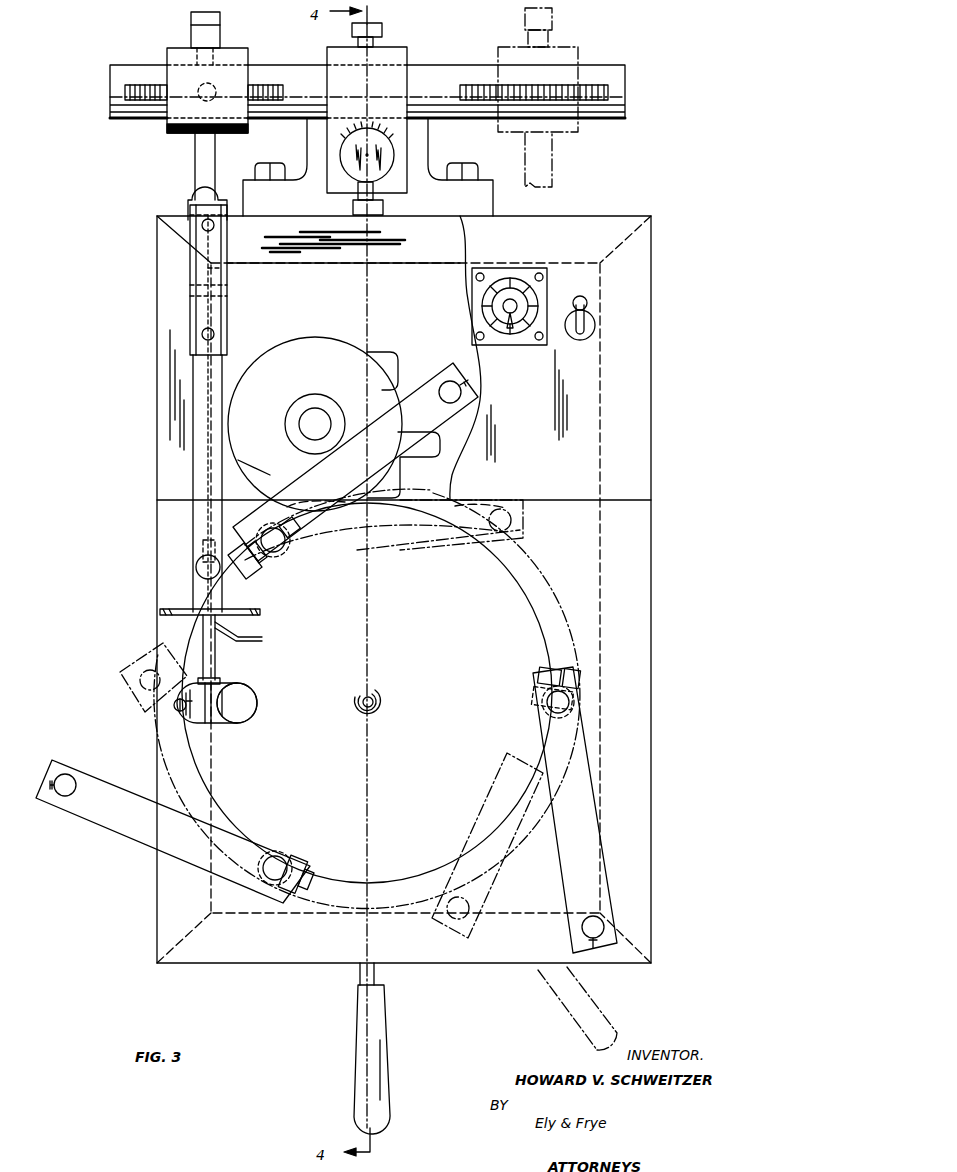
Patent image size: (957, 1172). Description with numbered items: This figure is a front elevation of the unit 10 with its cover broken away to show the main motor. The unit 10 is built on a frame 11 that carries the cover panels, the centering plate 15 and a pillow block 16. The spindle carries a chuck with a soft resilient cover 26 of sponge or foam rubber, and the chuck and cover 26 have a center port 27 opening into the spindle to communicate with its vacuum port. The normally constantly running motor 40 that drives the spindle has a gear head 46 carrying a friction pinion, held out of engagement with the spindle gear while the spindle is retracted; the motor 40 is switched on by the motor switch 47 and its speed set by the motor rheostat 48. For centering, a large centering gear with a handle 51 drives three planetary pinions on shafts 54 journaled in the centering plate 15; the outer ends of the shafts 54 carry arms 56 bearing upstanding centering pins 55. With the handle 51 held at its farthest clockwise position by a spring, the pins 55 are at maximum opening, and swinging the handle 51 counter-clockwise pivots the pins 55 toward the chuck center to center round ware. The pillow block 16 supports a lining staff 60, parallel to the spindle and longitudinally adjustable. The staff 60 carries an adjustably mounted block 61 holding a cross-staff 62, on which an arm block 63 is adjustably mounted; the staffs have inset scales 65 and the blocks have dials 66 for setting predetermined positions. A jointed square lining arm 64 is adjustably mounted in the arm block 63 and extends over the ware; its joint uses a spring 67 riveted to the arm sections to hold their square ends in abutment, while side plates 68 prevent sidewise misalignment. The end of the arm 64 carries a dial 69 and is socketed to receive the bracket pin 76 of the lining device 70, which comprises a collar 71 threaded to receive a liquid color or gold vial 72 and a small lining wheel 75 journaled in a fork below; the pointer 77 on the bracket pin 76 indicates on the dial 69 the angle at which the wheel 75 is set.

The unit 10 is at (656, 865).
The frame 11 is at (440, 265).
The centering plate 15 is at (640, 758).
The pillow block 16 is at (307, 140).
The soft resilient cover 26 is at (514, 592).
The center port 27 is at (374, 700).
The motor 40 is at (328, 346).
The gear head 46 is at (390, 354).
The motor switch 47 is at (592, 322).
The motor rheostat 48 is at (530, 298).
The handle 51 is at (385, 1014).
The shafts 54 is at (288, 550).
The centering pins 55 is at (456, 393).
The arms 56 is at (428, 386).
The lining staff 60 is at (393, 150).
The block 61 is at (330, 180).
The cross-staff 62 is at (440, 68).
The arm block 63 is at (233, 52).
The lining arm 64 is at (197, 155).
The inset scales 65 is at (272, 85).
The dials 66 is at (368, 125).
The spring 67 is at (200, 271).
The side plates 68 is at (230, 308).
The dial 69 is at (243, 609).
The lining device 70 is at (258, 696).
The collar 71 is at (184, 714).
The vial 72 is at (240, 716).
The lining wheel 75 is at (175, 705).
The bracket pin 76 is at (216, 665).
The pointer 77 is at (248, 638).